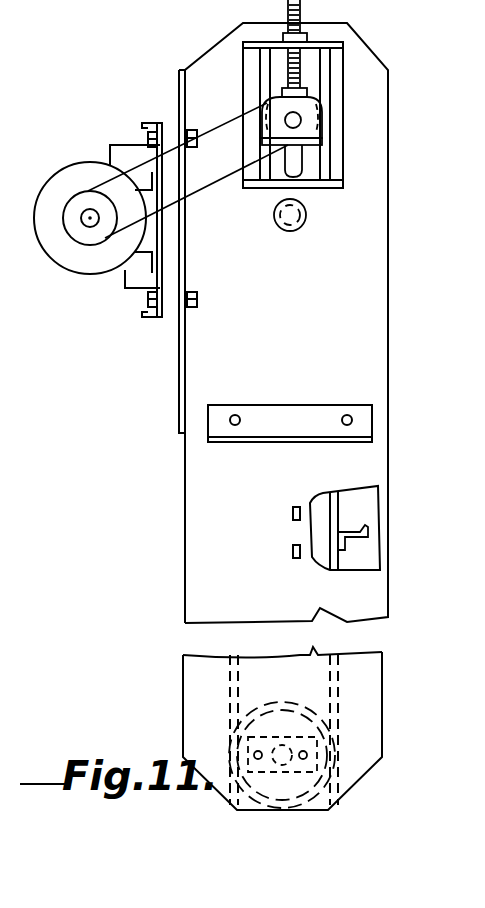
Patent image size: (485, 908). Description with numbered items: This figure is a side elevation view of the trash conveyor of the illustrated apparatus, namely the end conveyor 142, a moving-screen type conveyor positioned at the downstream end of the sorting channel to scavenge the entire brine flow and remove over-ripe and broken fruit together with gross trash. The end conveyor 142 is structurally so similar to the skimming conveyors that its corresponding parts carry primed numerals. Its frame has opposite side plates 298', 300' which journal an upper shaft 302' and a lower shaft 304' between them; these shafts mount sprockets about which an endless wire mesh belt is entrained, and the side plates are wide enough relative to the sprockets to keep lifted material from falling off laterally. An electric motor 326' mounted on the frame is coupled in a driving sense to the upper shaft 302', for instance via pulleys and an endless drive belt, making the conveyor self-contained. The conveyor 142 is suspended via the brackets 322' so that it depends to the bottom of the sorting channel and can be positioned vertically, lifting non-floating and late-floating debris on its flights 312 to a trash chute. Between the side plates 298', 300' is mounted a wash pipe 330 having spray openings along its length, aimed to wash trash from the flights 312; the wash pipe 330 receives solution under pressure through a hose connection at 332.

The end conveyor 142 is at (165, 388).
The side plate 298' is at (313, 323).
The side plate 300' is at (372, 528).
The upper shaft 302' is at (354, 88).
The lower shaft 304' is at (320, 755).
The conveyor flights 312 is at (353, 527).
The bracket 322' is at (290, 444).
The electric motor 326' is at (89, 203).
The wash pipe 330 is at (278, 228).
The hose connection 332 is at (292, 230).